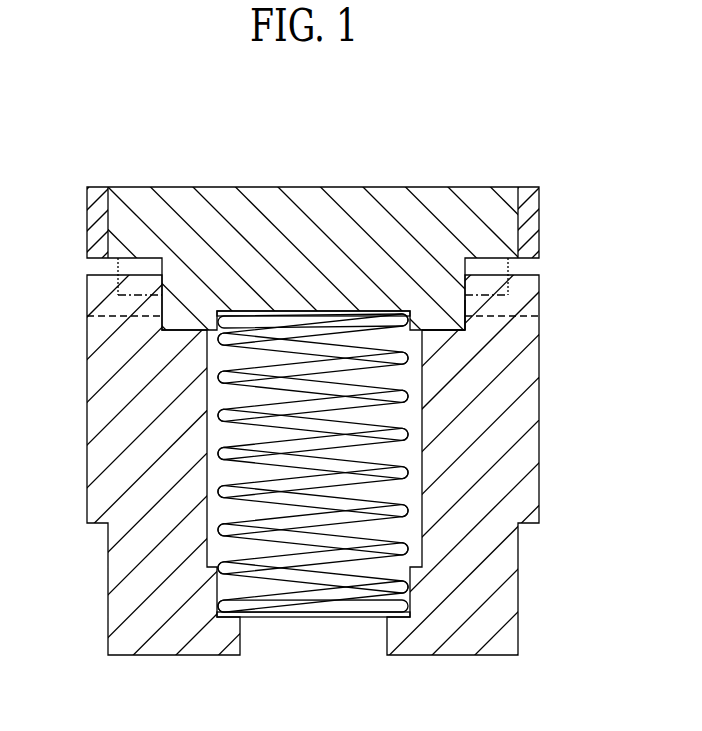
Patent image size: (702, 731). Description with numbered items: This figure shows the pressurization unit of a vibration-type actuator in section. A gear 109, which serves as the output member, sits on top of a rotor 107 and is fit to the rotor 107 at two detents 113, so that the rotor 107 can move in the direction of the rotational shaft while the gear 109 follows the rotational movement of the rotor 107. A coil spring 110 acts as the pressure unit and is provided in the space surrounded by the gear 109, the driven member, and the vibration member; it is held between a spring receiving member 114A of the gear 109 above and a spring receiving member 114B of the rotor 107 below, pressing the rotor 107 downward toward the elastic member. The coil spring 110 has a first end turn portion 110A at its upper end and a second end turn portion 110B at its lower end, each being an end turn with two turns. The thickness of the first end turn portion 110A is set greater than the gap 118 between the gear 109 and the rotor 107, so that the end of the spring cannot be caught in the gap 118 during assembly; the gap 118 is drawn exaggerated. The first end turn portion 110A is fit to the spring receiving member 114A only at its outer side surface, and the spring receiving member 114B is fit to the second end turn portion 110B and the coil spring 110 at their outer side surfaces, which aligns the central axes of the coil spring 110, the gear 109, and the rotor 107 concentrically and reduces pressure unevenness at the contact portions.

The rotor 107 is at (528, 452).
The gear 109 is at (470, 198).
The coil spring 110 is at (208, 496).
The first end turn portion 110A is at (227, 347).
The second end turn portion 110B is at (262, 606).
The detents 113 is at (133, 288).
The spring receiving member 114A is at (410, 322).
The spring receiving member 114B is at (412, 612).
The gap 118 is at (465, 330).